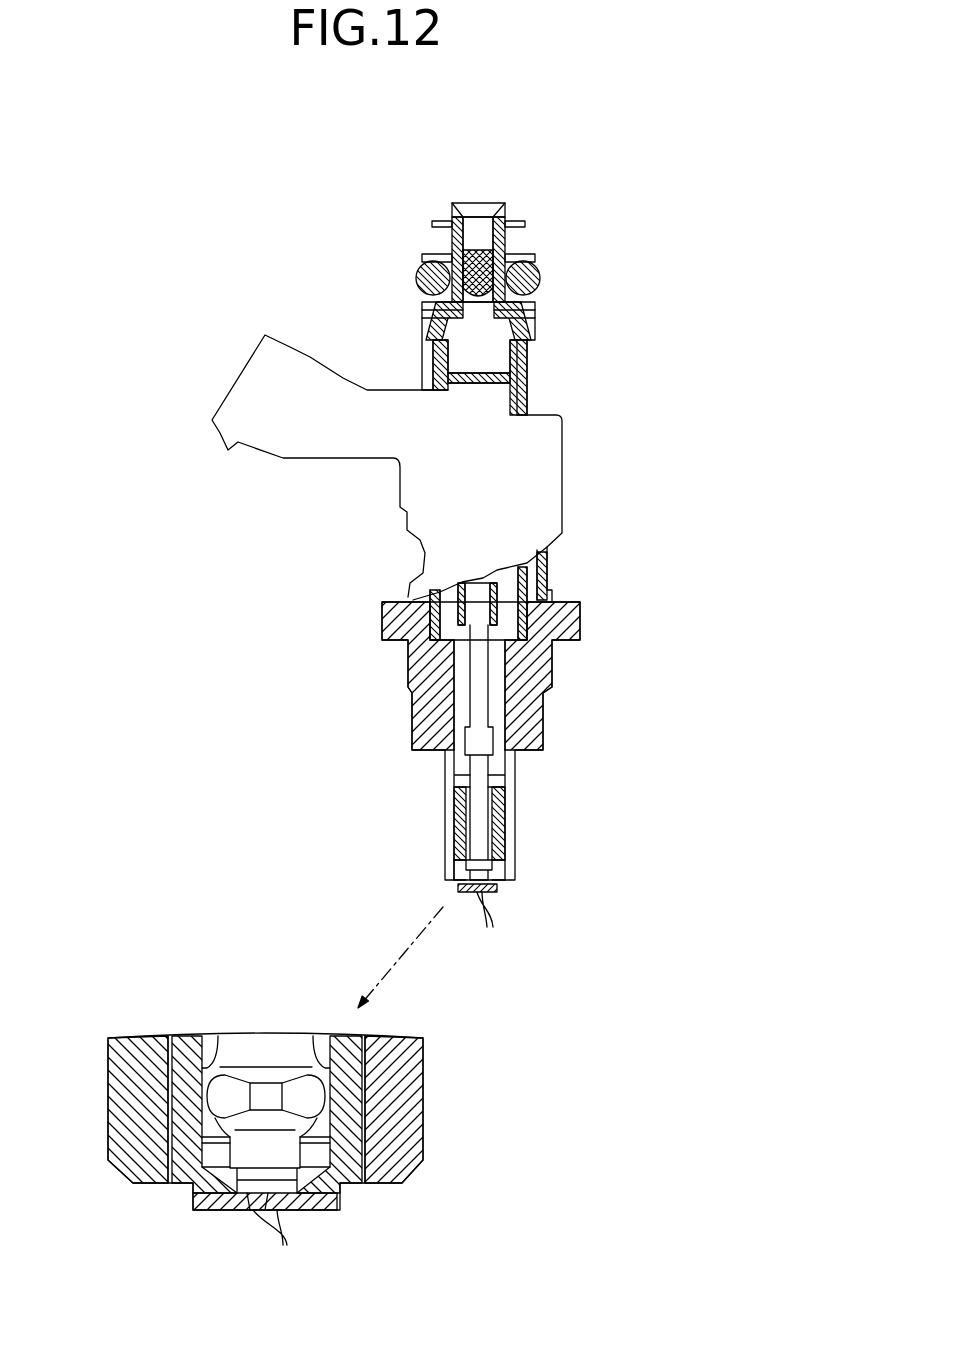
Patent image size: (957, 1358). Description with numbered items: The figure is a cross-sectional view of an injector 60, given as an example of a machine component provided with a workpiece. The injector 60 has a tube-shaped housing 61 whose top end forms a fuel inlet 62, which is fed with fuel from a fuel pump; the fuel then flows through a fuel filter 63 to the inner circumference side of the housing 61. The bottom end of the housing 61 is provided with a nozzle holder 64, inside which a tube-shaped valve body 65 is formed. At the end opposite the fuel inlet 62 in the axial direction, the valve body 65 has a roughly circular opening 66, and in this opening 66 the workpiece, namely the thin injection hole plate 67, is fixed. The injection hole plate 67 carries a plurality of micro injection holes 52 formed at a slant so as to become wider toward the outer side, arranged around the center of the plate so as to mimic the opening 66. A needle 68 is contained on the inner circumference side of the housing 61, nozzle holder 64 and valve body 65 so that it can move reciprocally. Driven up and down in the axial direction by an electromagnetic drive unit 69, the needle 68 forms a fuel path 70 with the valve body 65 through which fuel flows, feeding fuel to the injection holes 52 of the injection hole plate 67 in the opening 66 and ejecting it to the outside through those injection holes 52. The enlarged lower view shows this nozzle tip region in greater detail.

The injector 60 is at (530, 164).
The housing 61 is at (540, 343).
The fuel inlet 62 is at (473, 203).
The fuel filter 63 is at (510, 242).
The nozzle holder 64 is at (552, 688).
The valve body 65 is at (503, 808).
The opening 66 is at (247, 1210).
The injection hole plate 67 is at (463, 888).
The needle 68 is at (463, 683).
The drive unit 69 is at (578, 475).
The fuel path 70 is at (453, 808).
The injection holes 52 is at (386, 1089).